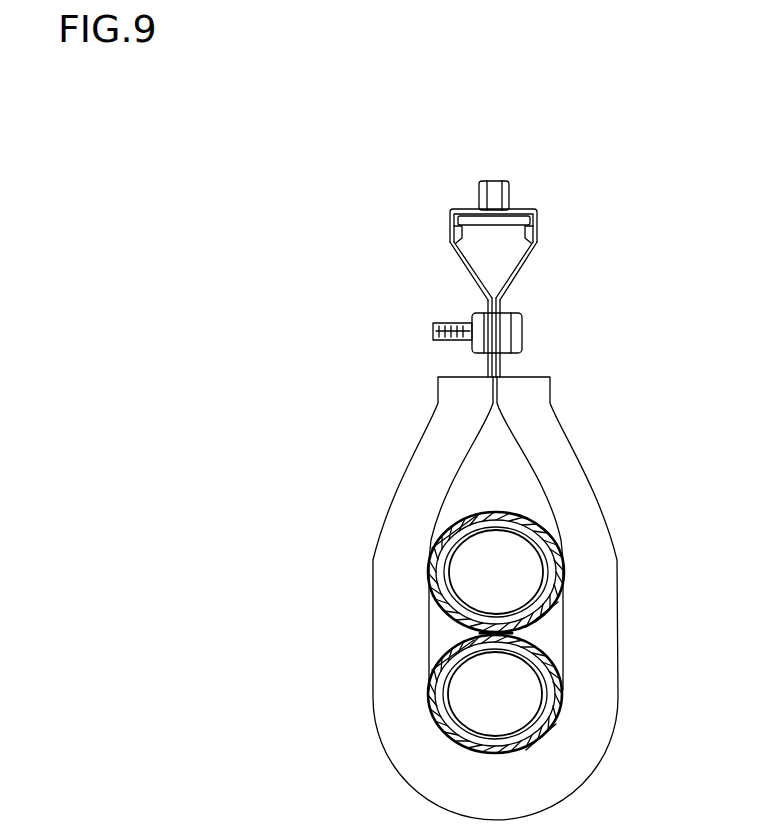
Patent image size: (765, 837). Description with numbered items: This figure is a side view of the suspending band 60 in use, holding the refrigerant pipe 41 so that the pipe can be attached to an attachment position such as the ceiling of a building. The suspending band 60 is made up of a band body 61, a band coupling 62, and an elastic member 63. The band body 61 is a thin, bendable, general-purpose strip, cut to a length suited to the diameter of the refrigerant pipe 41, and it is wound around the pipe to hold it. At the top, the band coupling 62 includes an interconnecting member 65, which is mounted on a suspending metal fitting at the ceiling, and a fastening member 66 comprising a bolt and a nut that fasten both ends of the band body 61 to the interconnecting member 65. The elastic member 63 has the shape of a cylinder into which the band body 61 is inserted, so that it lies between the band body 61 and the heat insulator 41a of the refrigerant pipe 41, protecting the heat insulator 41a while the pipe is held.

The suspending band 60 is at (563, 210).
The band coupling 62 is at (449, 225).
The interconnecting member 65 is at (468, 270).
The fastening member 66 is at (515, 334).
The band body 61 is at (490, 374).
The elastic member 63 is at (583, 760).
The refrigerant pipe 41 is at (528, 520).
The heat insulator 41a is at (483, 518).